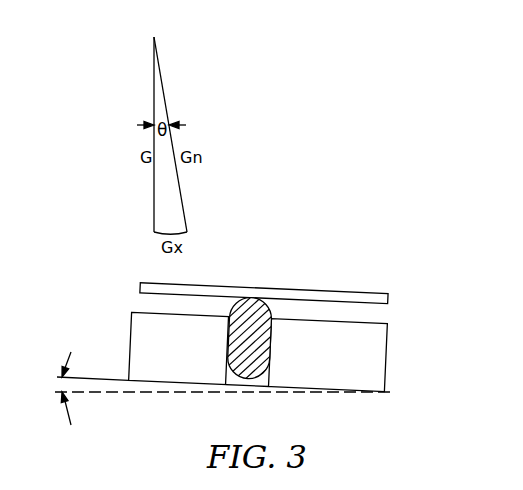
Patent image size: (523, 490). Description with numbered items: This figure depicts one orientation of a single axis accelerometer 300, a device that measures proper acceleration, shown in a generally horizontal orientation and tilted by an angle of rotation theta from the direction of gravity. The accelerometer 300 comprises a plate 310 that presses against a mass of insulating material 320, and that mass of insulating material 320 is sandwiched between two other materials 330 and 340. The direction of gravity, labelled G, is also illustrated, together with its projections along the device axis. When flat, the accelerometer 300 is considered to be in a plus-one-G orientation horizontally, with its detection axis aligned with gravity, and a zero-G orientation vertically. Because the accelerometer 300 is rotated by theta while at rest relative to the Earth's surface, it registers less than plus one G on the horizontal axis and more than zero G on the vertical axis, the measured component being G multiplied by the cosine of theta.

The single axis accelerometer 300 is at (378, 157).
The plate 310 is at (358, 282).
The mass of insulating material 320 is at (262, 380).
The material 330 is at (399, 348).
The material 340 is at (130, 353).